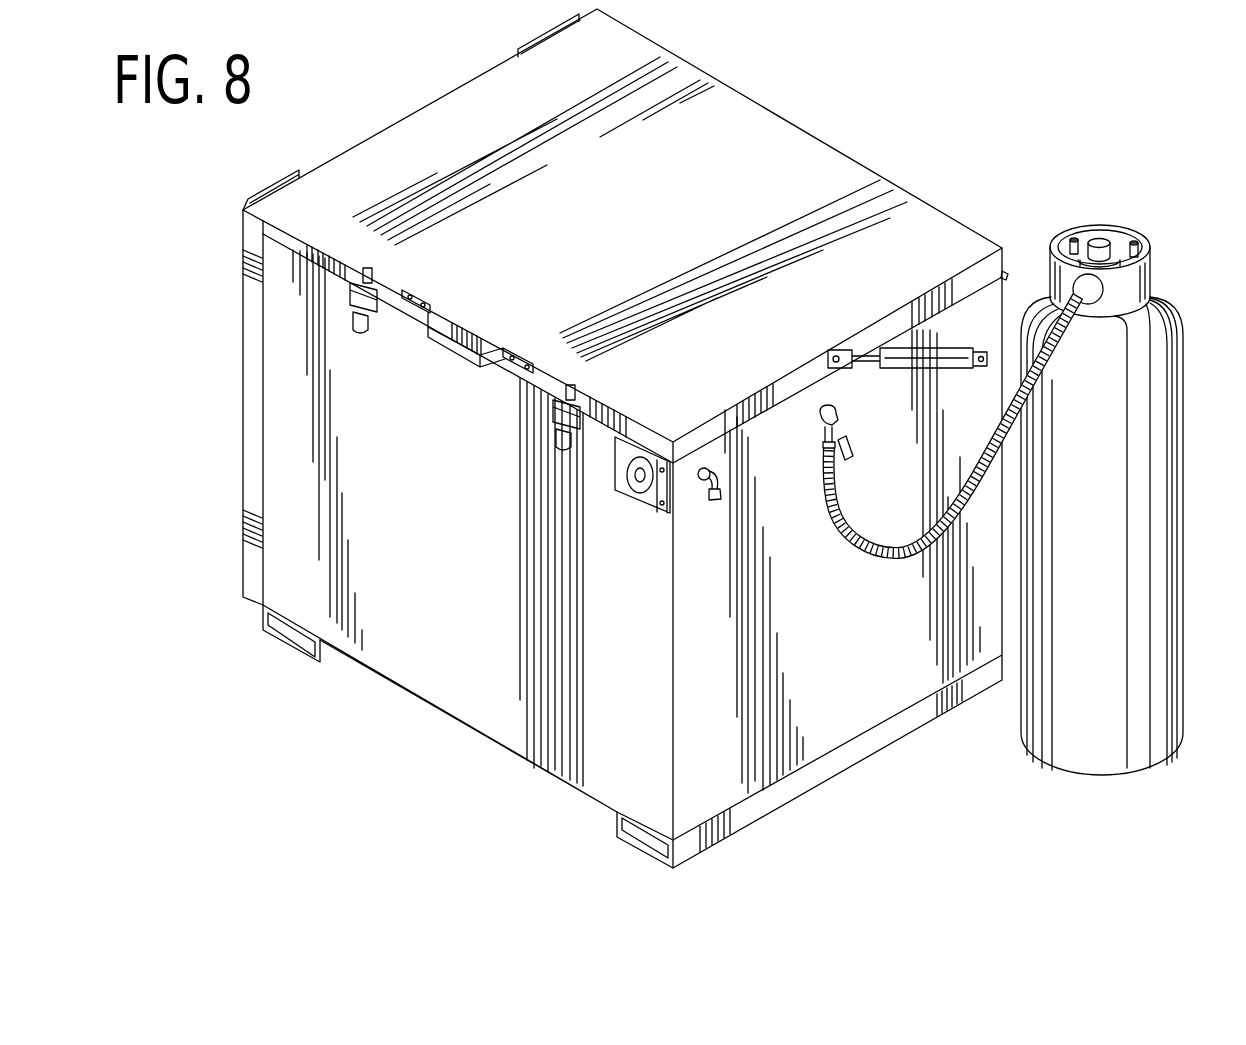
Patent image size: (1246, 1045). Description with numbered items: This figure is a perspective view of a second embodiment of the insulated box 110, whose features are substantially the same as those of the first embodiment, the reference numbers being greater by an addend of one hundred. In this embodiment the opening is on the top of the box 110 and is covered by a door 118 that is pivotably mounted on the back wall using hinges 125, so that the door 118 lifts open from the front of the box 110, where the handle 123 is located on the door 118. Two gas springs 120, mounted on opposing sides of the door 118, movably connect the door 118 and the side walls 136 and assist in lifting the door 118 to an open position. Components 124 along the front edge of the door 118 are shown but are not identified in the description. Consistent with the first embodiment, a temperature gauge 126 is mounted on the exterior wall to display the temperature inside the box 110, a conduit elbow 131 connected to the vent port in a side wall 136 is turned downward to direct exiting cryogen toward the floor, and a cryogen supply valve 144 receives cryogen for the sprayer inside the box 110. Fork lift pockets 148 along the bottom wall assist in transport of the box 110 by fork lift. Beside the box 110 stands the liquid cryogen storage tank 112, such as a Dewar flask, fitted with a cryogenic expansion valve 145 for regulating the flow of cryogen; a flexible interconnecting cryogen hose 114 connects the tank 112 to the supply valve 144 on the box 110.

The insulated box 110 is at (288, 452).
The liquid cryogen storage tank 112 is at (1183, 342).
The interconnecting cryogen hose 114 is at (850, 535).
The door 118 is at (737, 118).
The gas springs 120 is at (900, 347).
The handle 123 is at (443, 318).
The latch 124 is at (372, 270).
The hinges 125 is at (1004, 273).
The temperature gauge 126 is at (640, 440).
The conduit elbow 131 is at (712, 503).
The side walls 136 is at (697, 598).
The cryogen supply valve 144 is at (840, 416).
The cryogenic expansion valve 145 is at (1100, 238).
The fork lift pockets 148 is at (540, 37).